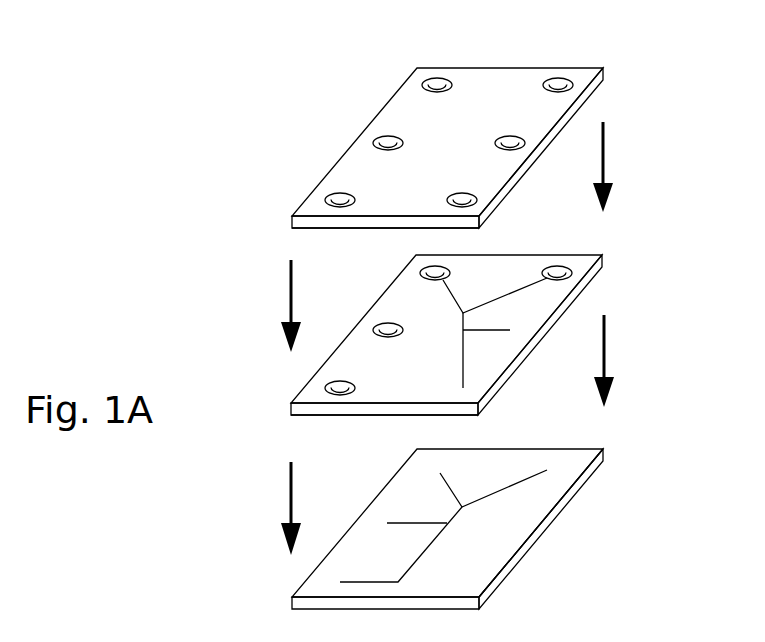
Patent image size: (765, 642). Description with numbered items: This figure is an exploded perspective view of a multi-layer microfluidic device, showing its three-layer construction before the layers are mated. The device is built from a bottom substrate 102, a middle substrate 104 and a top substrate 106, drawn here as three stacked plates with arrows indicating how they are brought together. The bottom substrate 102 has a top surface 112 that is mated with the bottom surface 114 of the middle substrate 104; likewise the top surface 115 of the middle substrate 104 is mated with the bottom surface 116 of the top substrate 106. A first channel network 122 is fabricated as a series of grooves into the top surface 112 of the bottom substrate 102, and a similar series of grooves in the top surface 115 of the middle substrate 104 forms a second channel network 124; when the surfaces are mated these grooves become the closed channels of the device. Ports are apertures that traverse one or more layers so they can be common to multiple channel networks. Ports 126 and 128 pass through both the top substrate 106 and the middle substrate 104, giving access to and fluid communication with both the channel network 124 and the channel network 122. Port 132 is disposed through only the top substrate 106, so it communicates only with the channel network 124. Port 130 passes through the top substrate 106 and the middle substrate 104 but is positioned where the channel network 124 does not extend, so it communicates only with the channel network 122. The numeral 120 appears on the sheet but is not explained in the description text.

The bottom substrate 102 is at (606, 455).
The middle substrate 104 is at (606, 263).
The top substrate 106 is at (606, 76).
The top surface 112 is at (507, 518).
The bottom surface 114 is at (337, 418).
The top surface 115 is at (315, 393).
The bottom surface 116 is at (455, 229).
The microfluidic device 120 is at (695, 637).
The first channel network 122 is at (499, 474).
The second channel network 124 is at (523, 300).
The port 126 is at (445, 72).
The port 128 is at (569, 70).
The port 130 is at (314, 207).
The port 132 is at (490, 191).